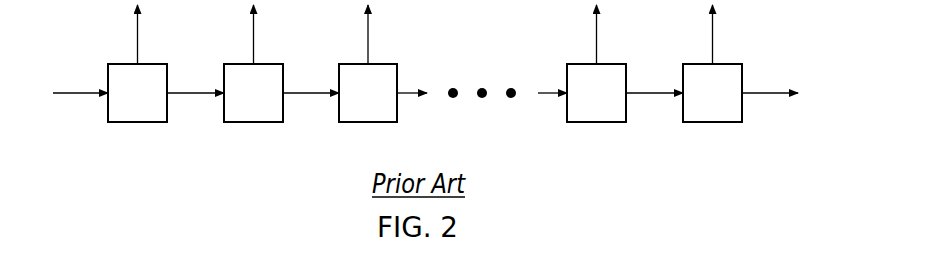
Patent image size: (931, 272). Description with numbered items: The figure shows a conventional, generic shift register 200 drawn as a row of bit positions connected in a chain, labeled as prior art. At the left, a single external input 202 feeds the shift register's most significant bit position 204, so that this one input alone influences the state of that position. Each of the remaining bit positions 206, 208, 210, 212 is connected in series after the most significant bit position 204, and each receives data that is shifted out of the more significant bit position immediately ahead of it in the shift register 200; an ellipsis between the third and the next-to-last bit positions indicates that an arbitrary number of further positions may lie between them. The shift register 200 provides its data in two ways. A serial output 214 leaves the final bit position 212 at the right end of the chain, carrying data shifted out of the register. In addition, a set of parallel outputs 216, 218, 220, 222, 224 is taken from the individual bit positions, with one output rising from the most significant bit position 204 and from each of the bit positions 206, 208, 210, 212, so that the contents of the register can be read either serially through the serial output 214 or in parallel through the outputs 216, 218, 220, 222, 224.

The shift register 200 is at (197, 164).
The external input 202 is at (95, 91).
The most significant bit position 204 is at (137, 93).
The bit position 206 is at (253, 93).
The bit position 208 is at (368, 93).
The bit position 210 is at (596, 93).
The bit position 212 is at (712, 93).
The serial output 214 is at (753, 94).
The parallel output 216 is at (138, 52).
The parallel output 218 is at (254, 52).
The parallel output 220 is at (369, 52).
The parallel output 222 is at (598, 52).
The parallel output 224 is at (714, 52).